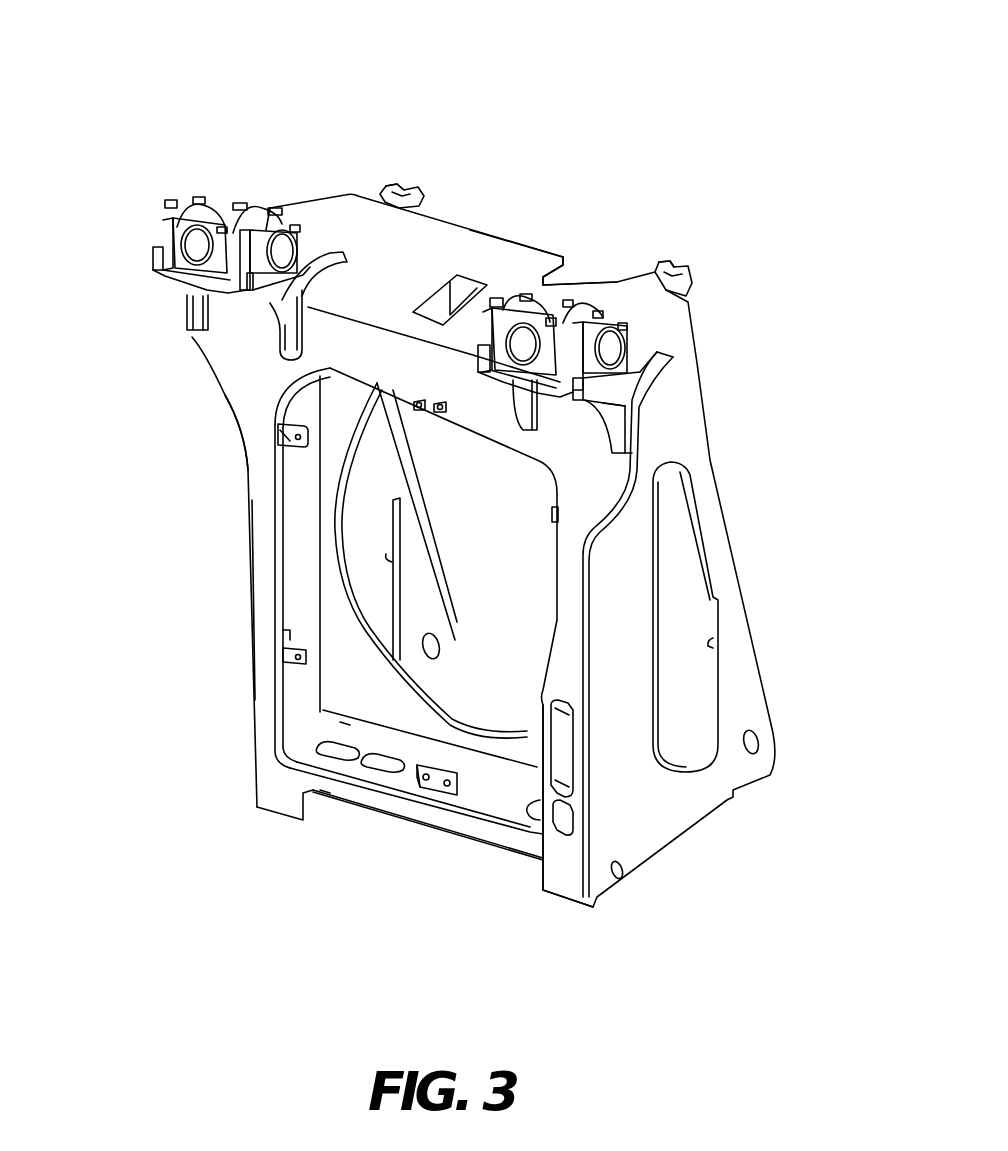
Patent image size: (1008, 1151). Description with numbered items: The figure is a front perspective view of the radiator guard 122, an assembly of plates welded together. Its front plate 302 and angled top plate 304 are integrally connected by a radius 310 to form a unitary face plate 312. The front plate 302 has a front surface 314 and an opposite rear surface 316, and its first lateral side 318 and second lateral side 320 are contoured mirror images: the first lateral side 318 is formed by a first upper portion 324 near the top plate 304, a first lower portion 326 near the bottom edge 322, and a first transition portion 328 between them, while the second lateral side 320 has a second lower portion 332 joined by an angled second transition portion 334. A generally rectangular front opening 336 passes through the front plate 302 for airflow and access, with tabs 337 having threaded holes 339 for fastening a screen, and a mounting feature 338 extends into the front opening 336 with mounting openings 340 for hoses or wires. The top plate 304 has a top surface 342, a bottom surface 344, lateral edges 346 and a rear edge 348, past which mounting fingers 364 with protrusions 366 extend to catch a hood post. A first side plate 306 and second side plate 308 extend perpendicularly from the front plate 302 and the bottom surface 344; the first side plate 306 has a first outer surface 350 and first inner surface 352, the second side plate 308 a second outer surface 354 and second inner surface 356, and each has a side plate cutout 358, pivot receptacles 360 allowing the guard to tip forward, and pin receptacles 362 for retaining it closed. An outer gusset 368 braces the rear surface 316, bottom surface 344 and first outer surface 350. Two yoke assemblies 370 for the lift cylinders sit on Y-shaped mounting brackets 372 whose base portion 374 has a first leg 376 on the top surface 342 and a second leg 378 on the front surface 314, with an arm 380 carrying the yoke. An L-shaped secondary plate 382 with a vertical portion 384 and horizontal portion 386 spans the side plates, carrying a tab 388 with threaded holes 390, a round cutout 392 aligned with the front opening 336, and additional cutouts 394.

The radiator guard 122 is at (168, 66).
The front plate 302 is at (205, 768).
The top plate 304 is at (287, 187).
The first side plate 306 is at (702, 862).
The second side plate 308 is at (434, 484).
The radius 310 is at (373, 322).
The unitary face plate 312 is at (172, 384).
The front surface 314 is at (190, 338).
The rear surface 316 is at (283, 640).
The first lateral side 318 is at (607, 719).
The second lateral side 320 is at (243, 538).
The bottom edge 322 is at (275, 810).
The first upper portion 324 is at (617, 458).
The first lower portion 326 is at (660, 677).
The first transition portion 328 is at (603, 502).
The second lower portion 332 is at (253, 597).
The second transition portion 334 is at (223, 402).
The front opening 336 is at (487, 822).
The tabs 337 is at (297, 437).
The mounting feature 338 is at (543, 782).
The threaded holes 339 is at (287, 432).
The mounting openings 340 is at (588, 782).
The top surface 342 is at (507, 253).
The bottom surface 344 is at (567, 282).
The lateral edges 346 is at (665, 362).
The rear edge 348 is at (577, 285).
The first outer surface 350 is at (740, 672).
The first inner surface 352 is at (710, 643).
The second outer surface 354 is at (388, 557).
The second inner surface 356 is at (423, 595).
The side plate cutout 358 is at (401, 608).
The pivot receptacles 360 is at (615, 873).
The pin receptacles 362 is at (758, 745).
The mounting fingers 364 is at (400, 184).
The protrusions 366 is at (392, 188).
The outer gusset 368 is at (662, 405).
The yoke assemblies 370 is at (140, 209).
The mounting brackets 372 is at (590, 448).
The base portion 374 is at (618, 440).
The first leg 376 is at (588, 387).
The second leg 378 is at (610, 503).
The arm 380 is at (635, 453).
The secondary plate 382 is at (363, 703).
The vertical portion 384 is at (420, 731).
The horizontal portion 386 is at (382, 780).
The tab 388 is at (425, 788).
The threaded holes 390 is at (447, 784).
The cutout 392 is at (388, 705).
The additional cutouts 394 is at (360, 766).